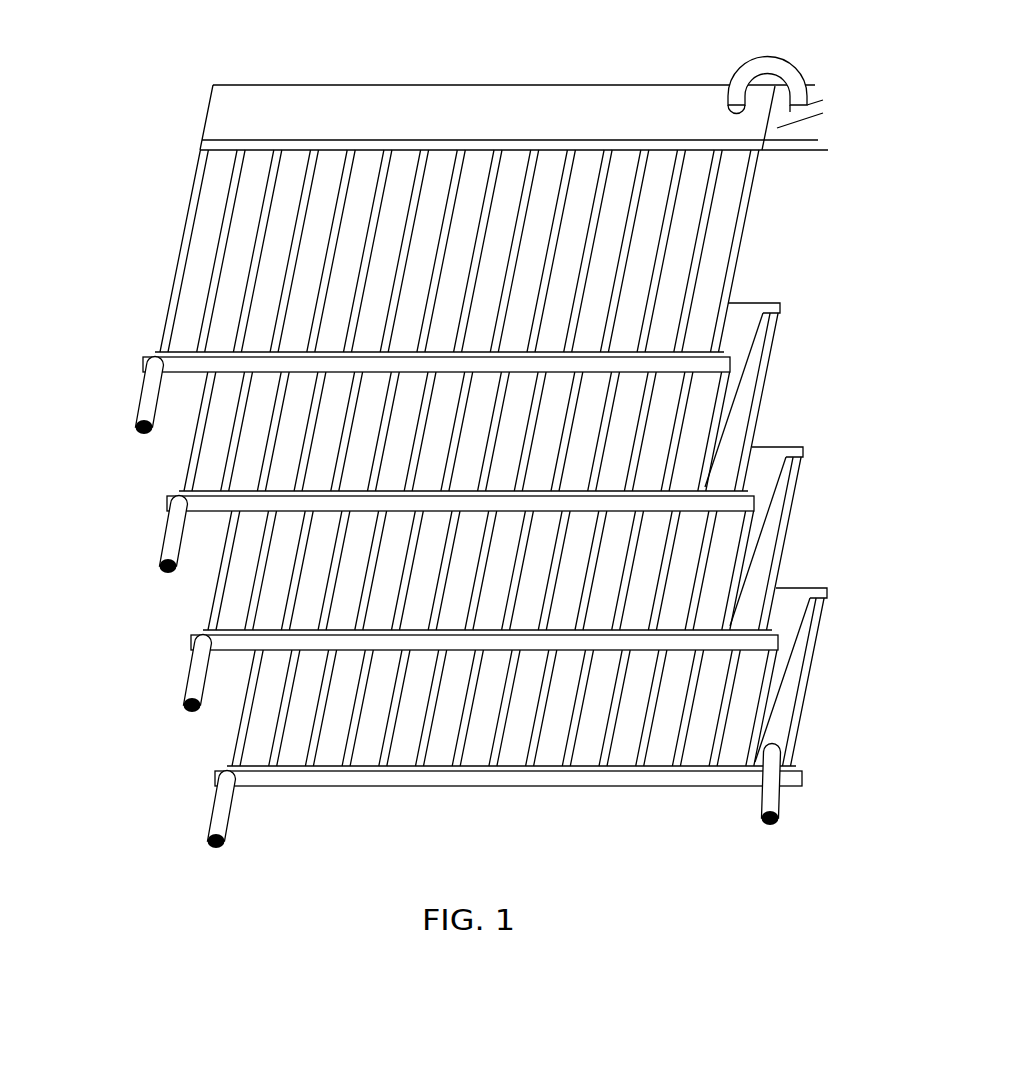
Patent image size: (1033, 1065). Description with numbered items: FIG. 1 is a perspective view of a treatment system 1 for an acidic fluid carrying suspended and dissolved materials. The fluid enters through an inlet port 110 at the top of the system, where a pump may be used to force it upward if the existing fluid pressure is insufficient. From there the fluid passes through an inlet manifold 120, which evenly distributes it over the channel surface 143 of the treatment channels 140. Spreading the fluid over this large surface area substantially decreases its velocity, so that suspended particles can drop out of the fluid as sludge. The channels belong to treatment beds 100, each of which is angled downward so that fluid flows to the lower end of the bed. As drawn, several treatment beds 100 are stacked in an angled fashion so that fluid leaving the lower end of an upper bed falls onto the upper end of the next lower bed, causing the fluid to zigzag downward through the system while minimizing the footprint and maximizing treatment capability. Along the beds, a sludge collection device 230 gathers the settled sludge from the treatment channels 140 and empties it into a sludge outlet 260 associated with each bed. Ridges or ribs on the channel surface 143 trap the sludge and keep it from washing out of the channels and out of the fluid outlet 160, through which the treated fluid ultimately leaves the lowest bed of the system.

The treatment system 1 is at (138, 228).
The treatment bed 100 is at (768, 397).
The inlet port 110 is at (753, 68).
The inlet manifold 120 is at (487, 115).
The treatment channels 140 is at (455, 230).
The channel surface 143 is at (321, 178).
The fluid outlet 160 is at (767, 792).
The sludge collection device 230 is at (618, 640).
The sludge outlet 260 is at (193, 677).